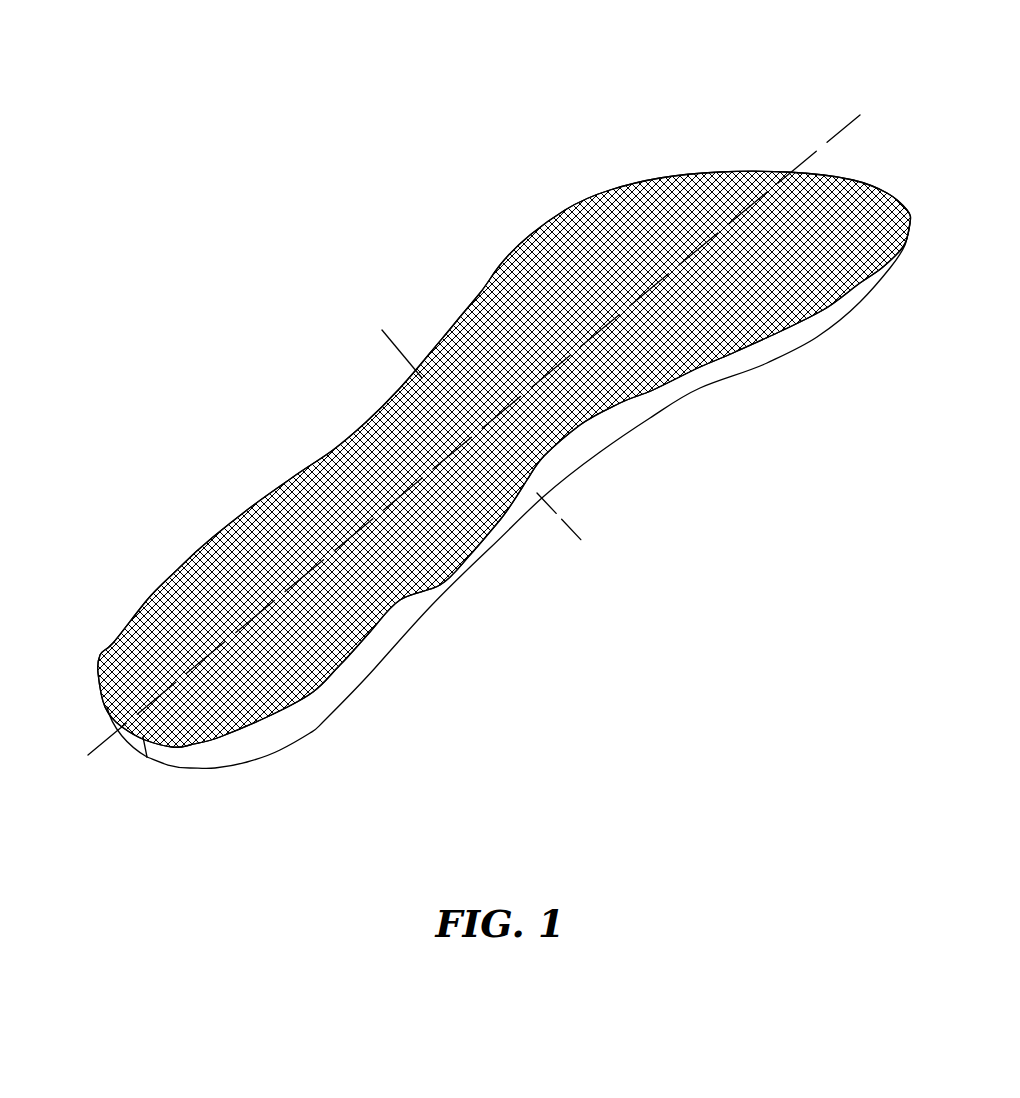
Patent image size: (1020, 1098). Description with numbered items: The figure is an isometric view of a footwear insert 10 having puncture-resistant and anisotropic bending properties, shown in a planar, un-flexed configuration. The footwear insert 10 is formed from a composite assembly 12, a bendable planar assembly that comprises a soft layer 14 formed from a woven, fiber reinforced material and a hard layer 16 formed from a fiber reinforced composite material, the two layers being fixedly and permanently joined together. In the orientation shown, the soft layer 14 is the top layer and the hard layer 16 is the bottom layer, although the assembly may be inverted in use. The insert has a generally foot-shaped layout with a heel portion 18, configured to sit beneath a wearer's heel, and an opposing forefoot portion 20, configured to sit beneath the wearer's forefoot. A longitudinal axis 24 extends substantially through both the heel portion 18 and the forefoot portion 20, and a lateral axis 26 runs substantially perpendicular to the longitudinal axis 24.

The footwear insert 10 is at (283, 331).
The composite assembly 12 is at (516, 540).
The soft layer 14 is at (402, 602).
The hard layer 16 is at (376, 672).
The heel portion 18 is at (214, 702).
The forefoot portion 20 is at (773, 298).
The longitudinal axis 24 is at (822, 147).
The lateral axis 26 is at (393, 336).